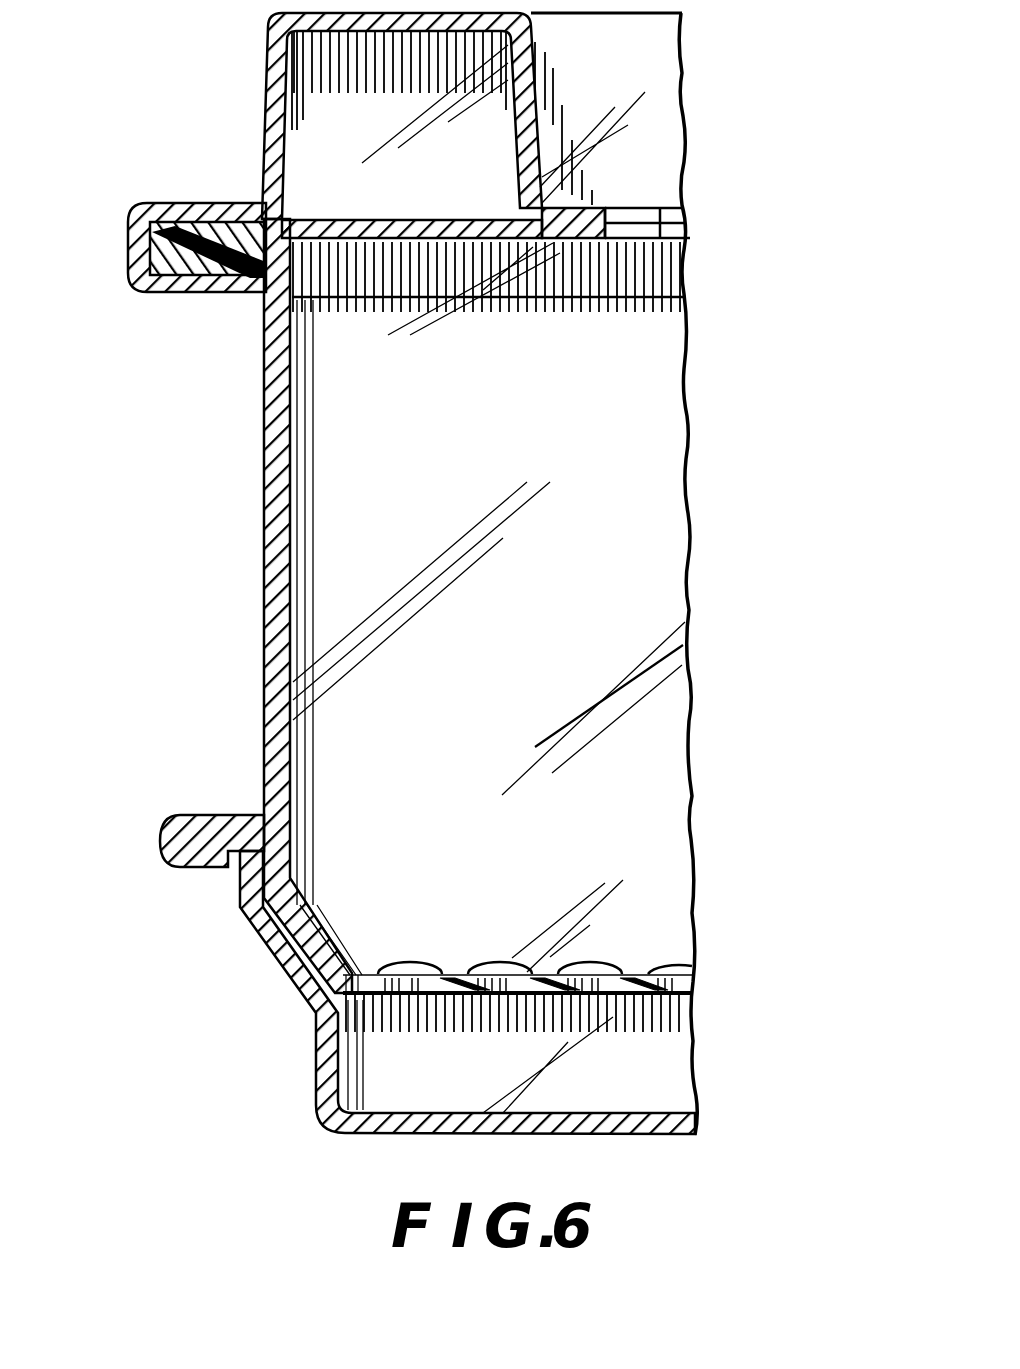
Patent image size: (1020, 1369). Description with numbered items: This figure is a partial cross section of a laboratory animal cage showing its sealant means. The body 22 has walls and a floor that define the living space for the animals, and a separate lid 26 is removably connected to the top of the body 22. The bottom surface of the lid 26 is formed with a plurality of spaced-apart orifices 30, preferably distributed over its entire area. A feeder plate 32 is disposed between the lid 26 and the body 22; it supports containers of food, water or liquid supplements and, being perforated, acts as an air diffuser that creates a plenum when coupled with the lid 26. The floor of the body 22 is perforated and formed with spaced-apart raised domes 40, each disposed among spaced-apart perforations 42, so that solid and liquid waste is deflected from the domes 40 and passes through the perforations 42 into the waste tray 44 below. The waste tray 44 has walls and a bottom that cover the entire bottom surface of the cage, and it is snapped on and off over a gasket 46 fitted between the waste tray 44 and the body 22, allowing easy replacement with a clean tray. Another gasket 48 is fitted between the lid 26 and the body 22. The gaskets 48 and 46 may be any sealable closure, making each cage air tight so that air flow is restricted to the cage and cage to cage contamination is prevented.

The body 22 is at (268, 572).
The lid 26 is at (266, 100).
The orifices 30 is at (628, 214).
The feeder plate 32 is at (668, 228).
The raised domes 40 is at (684, 952).
The perforations 42 is at (403, 987).
The waste tray 44 is at (332, 1105).
The gasket 46 is at (263, 815).
The gasket 48 is at (195, 292).